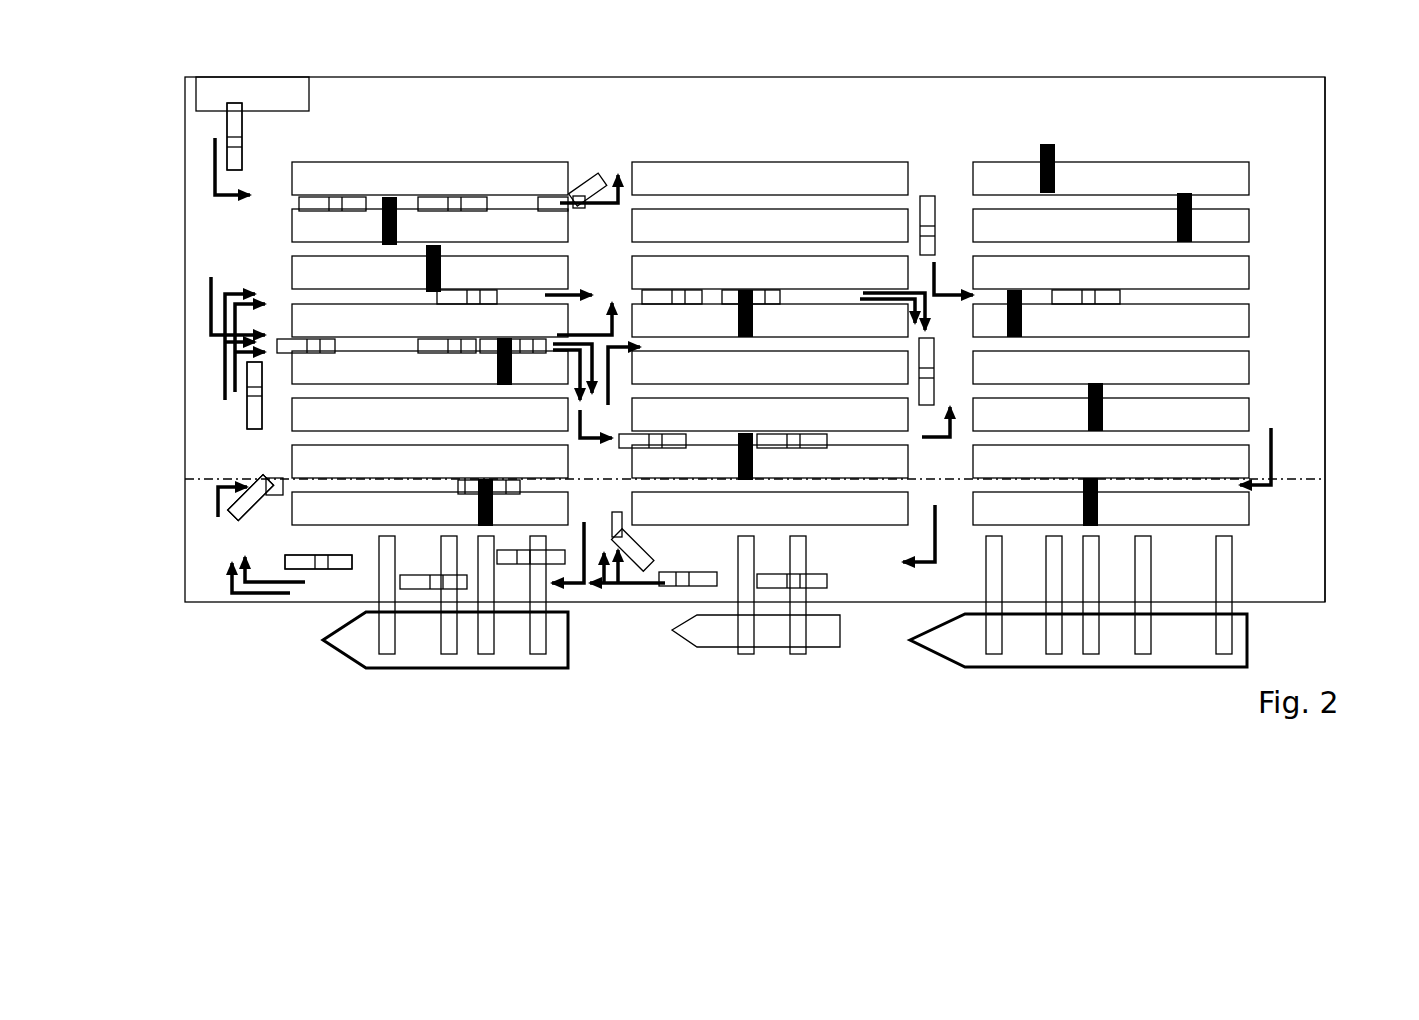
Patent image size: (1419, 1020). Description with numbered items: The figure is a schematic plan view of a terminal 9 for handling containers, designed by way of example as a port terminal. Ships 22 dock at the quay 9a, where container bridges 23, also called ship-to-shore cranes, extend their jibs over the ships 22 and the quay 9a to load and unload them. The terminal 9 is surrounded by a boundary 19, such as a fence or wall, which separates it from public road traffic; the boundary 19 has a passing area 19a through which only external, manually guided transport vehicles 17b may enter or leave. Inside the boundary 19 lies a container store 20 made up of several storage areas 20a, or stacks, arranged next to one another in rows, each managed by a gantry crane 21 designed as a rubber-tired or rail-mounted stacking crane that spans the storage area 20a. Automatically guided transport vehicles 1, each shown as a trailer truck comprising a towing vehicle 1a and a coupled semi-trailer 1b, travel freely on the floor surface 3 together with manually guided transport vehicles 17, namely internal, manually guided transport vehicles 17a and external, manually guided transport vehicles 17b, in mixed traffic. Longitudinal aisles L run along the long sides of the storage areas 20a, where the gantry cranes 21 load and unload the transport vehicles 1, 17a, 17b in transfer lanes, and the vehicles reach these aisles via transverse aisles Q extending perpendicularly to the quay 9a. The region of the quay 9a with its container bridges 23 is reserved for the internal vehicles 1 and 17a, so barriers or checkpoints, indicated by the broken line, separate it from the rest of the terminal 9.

The automatically guided transport vehicle 1 is at (928, 193).
The towing vehicle 1a is at (266, 477).
The semi-trailer 1b is at (233, 517).
The floor surface 3 is at (1297, 382).
The terminal 9 is at (157, 340).
The quay 9a is at (956, 585).
The transfer station 17 is at (289, 336).
The internal, manually guided transport vehicle 17a is at (292, 563).
The external, manually guided transport vehicle 17b is at (228, 124).
The boundary 19 is at (1323, 327).
The passing area 19a is at (268, 95).
The container store 20 is at (893, 150).
The storage area 20a is at (780, 174).
The gantry crane 21 is at (380, 238).
The ship 22 is at (350, 652).
The container bridge 23 is at (383, 635).
The longitudinal aisle L is at (1242, 200).
The transverse aisle Q is at (590, 160).